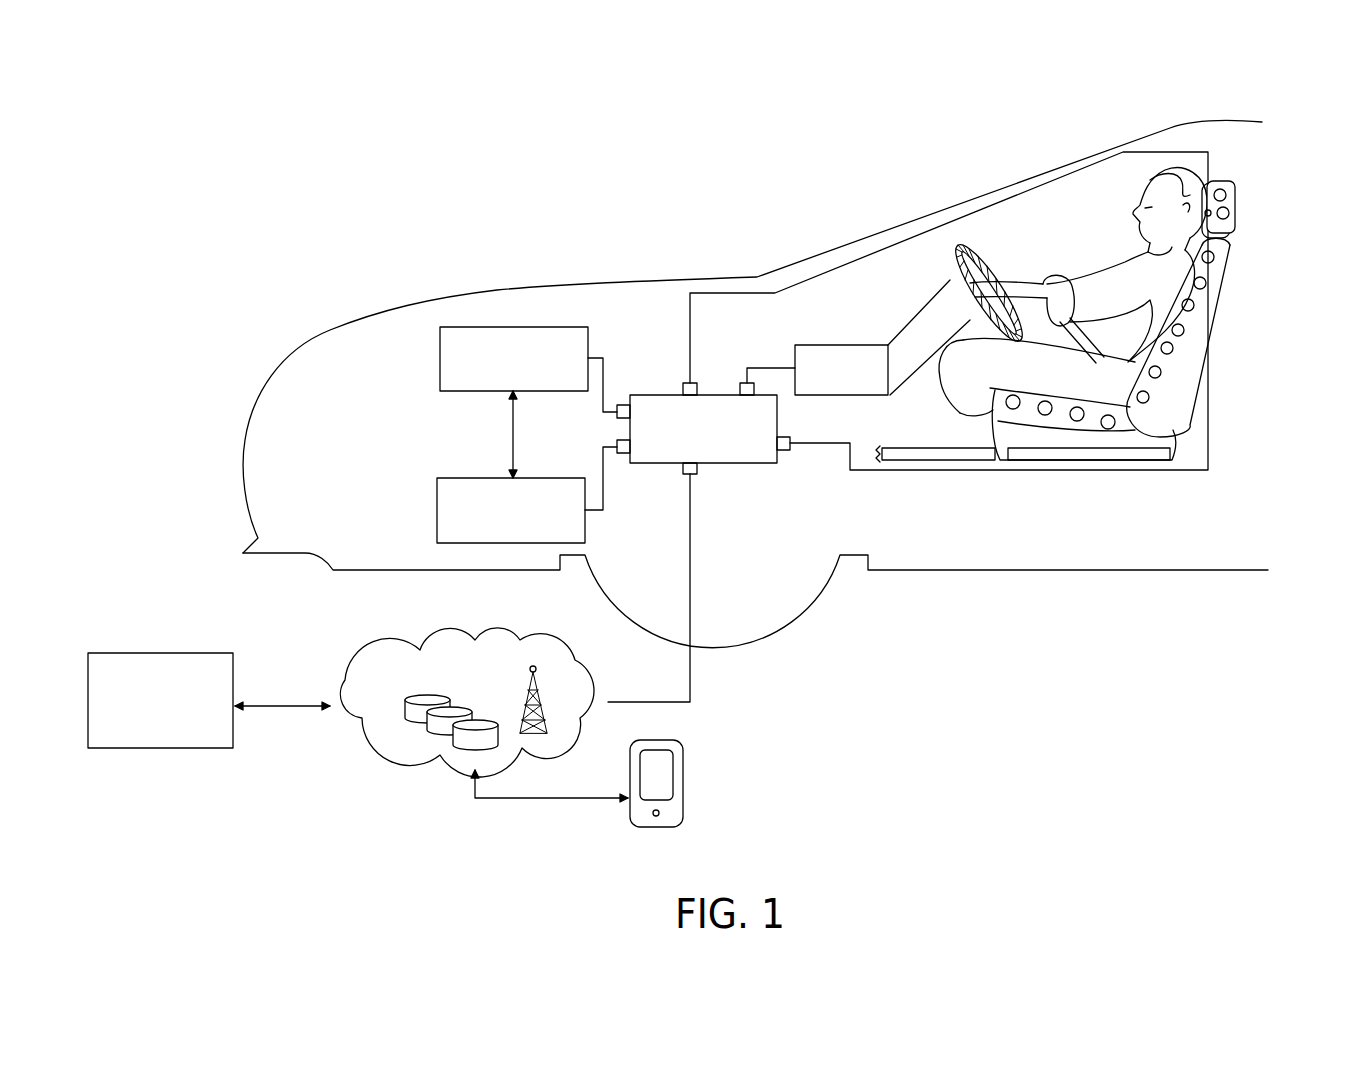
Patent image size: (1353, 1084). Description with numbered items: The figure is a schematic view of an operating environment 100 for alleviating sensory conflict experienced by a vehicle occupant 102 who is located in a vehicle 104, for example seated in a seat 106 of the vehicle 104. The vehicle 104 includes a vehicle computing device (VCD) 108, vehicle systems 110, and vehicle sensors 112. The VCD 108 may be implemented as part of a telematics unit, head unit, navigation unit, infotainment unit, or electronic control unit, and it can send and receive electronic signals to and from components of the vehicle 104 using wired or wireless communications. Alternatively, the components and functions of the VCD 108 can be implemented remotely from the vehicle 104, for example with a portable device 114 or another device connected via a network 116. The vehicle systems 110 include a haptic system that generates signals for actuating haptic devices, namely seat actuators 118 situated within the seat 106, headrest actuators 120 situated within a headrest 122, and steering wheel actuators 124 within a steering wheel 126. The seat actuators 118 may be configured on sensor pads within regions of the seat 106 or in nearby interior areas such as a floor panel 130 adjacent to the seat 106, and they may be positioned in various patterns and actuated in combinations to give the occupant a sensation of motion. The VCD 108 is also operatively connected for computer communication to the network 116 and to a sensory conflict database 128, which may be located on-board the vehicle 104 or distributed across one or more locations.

The operating environment 100 is at (571, 99).
The vehicle occupant 102 is at (1150, 176).
The vehicle 104 is at (490, 296).
The seat 106 is at (1222, 312).
The vehicle computing device (VCD) 108 is at (750, 465).
The vehicle systems 110 is at (440, 374).
The vehicle sensors 112 is at (437, 512).
The portable device 114 is at (683, 778).
The network 116 is at (431, 715).
The seat actuators 118 is at (1160, 372).
The headrest actuators 120 is at (1225, 215).
The headrest 122 is at (1236, 177).
The steering wheel actuators 124 is at (982, 252).
The steering wheel 126 is at (983, 234).
The sensory conflict database 128 is at (160, 700).
The floor panel 130 is at (935, 462).